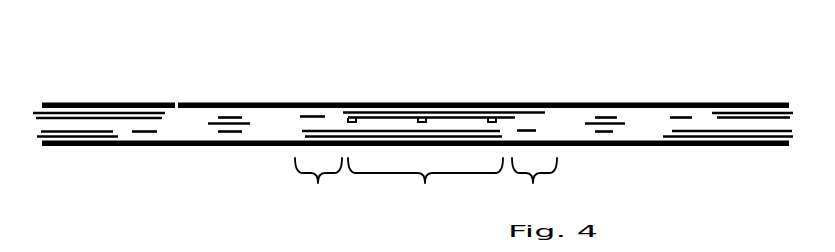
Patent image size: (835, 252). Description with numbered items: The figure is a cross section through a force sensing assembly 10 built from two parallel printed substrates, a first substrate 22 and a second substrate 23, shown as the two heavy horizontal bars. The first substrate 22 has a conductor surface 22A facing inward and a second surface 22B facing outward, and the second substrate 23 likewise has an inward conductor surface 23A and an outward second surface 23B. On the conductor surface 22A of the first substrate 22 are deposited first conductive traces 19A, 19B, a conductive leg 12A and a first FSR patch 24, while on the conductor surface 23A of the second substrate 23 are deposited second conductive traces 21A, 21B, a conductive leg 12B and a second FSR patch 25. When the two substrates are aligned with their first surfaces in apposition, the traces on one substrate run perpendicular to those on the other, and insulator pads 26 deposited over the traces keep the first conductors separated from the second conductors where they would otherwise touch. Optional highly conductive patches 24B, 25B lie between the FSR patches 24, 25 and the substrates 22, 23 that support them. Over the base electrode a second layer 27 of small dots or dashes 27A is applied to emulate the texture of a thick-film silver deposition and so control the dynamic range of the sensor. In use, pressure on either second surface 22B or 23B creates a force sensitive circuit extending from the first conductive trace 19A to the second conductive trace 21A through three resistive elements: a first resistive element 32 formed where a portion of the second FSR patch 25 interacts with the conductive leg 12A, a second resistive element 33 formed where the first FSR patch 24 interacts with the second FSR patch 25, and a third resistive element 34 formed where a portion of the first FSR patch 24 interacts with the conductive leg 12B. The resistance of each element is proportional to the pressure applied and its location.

The force sensing assembly 10 is at (759, 75).
The conductive leg 12A is at (199, 95).
The conductive leg 12B is at (655, 150).
The first conductive trace 19A is at (240, 82).
The first conductive trace 19B is at (618, 84).
The second conductive trace 21A is at (636, 159).
The second conductive trace 21B is at (214, 167).
The first substrate 22 is at (412, 73).
The conductor surface 22A is at (177, 133).
The second surface 22B is at (177, 87).
The second substrate 23 is at (401, 175).
The conductor surface 23A is at (570, 113).
The second surface 23B is at (750, 162).
The first FSR patch 24 is at (431, 86).
The highly conductive patch 24B is at (444, 81).
The second FSR patch 25 is at (373, 155).
The highly conductive patch 25B is at (403, 172).
The insulator pad 26 is at (252, 122).
The second layer 27 is at (520, 121).
The dots or dashes 27A is at (422, 91).
The first resistive element 32 is at (318, 185).
The second resistive element 33 is at (425, 185).
The third resistive element 34 is at (534, 185).